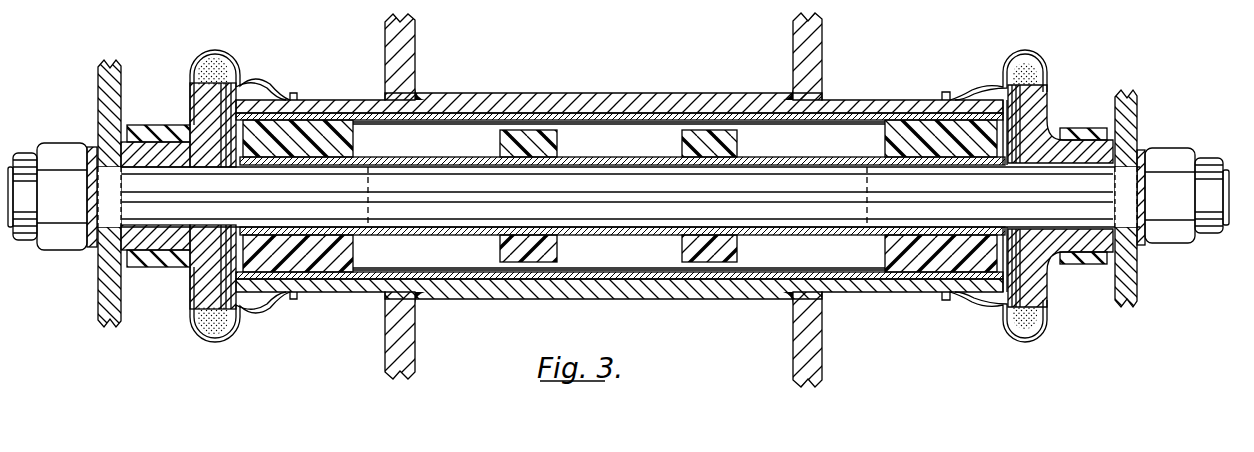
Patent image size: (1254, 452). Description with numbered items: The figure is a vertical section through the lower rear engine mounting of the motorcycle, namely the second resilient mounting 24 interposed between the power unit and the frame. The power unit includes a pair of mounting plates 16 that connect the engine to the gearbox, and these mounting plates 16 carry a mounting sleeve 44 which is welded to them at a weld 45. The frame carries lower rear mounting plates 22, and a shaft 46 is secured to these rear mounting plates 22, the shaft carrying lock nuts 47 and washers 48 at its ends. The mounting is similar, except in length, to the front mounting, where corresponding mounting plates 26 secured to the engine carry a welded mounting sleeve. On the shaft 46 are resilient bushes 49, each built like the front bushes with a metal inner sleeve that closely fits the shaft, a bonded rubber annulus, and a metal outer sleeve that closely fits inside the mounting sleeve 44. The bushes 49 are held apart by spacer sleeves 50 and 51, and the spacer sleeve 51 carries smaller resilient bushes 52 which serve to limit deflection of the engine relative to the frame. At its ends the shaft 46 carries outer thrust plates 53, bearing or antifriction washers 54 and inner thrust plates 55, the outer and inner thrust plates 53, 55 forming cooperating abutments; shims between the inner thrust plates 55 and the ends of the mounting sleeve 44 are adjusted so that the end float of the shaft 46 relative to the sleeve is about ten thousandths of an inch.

The mounting plates 16 is at (603, 193).
The lower rear mounting plates 22 is at (97, 297).
The second resilient mounting 24 is at (638, 300).
The mounting plates 26 is at (798, 14).
The mounting sleeve 44 is at (692, 288).
The weld 45 is at (786, 300).
The shaft 46 is at (1096, 200).
The lock nuts 47 is at (1173, 247).
The washers 48 is at (1140, 247).
The resilient bushes 49 is at (324, 258).
The spacer sleeve 50 is at (860, 283).
The spacer sleeve 51 is at (827, 232).
The resilient bushes 52 is at (531, 254).
The outer thrust plates 53 is at (1077, 150).
The bearing or antifriction washers 54 is at (1043, 84).
The inner thrust plates 55 is at (1043, 108).